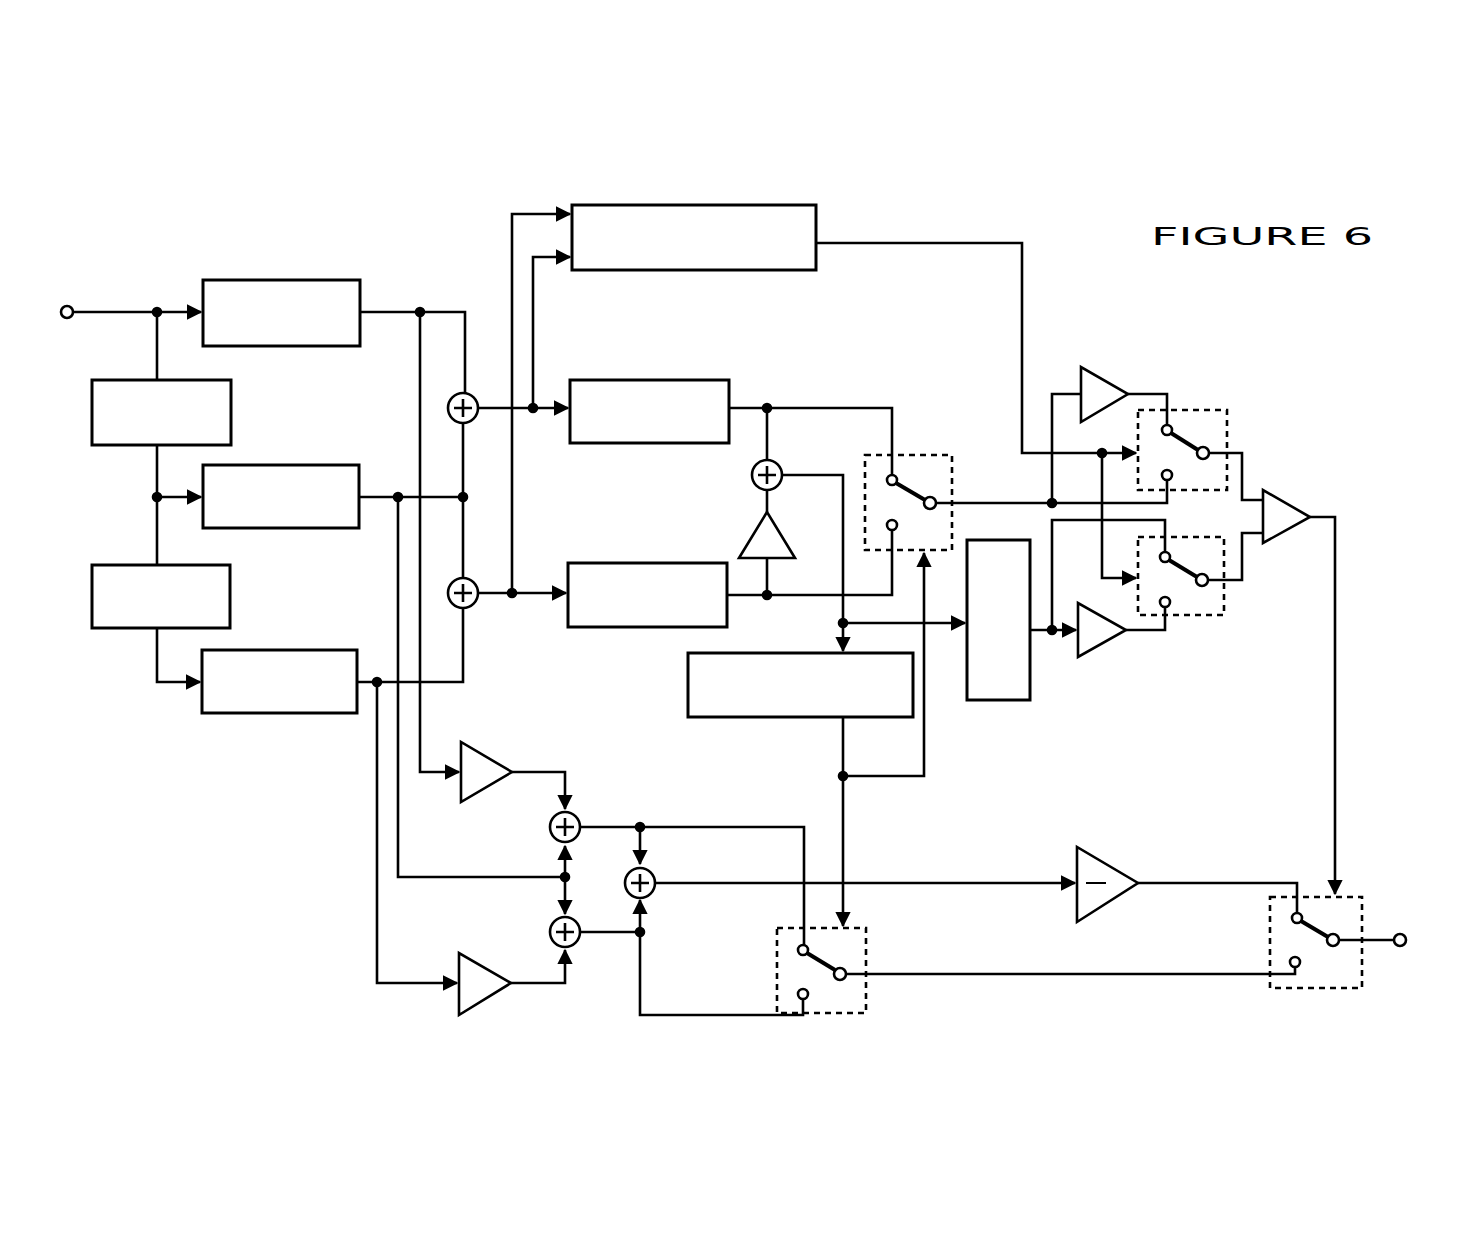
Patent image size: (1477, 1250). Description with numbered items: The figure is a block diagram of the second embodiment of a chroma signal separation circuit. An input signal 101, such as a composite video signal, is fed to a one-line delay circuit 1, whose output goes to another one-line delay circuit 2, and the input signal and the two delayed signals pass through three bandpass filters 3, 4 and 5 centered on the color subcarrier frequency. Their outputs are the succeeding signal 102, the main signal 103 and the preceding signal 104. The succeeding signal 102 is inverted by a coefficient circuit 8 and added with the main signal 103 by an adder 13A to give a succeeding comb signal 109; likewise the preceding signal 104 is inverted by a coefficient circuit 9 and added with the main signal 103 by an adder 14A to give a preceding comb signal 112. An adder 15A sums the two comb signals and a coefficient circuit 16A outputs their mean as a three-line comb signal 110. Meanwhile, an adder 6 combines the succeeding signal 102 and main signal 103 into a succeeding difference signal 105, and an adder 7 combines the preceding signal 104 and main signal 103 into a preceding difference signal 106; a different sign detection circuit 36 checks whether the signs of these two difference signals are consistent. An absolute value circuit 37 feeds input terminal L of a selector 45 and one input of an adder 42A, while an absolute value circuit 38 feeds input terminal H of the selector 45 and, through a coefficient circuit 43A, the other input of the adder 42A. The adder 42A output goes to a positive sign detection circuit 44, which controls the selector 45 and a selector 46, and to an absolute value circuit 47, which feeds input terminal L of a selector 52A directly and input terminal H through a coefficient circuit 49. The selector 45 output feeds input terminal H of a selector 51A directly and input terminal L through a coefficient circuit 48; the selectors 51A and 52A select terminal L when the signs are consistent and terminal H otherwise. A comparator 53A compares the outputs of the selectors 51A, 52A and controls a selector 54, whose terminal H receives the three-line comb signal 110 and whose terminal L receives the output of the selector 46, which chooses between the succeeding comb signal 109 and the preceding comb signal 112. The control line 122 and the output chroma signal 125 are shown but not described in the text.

The one-line delay circuit 1 is at (130, 380).
The one-line delay circuit 2 is at (130, 565).
The bandpass filter 3 is at (302, 280).
The bandpass filter 4 is at (298, 465).
The bandpass filter 5 is at (298, 650).
The adder 6 is at (468, 393).
The adder 7 is at (467, 578).
The coefficient circuit 8 is at (482, 752).
The coefficient circuit 9 is at (487, 965).
The adder 13A is at (573, 812).
The adder 14A is at (570, 947).
The adder 15A is at (645, 867).
The coefficient circuit 16A is at (1097, 858).
The different sign detection circuit 36 is at (680, 270).
The absolute value circuit 37 is at (672, 380).
The absolute value circuit 38 is at (670, 563).
The adder 42A is at (777, 463).
The coefficient circuit 43A is at (783, 540).
The positive sign detection circuit 44 is at (798, 717).
The selector 45 is at (910, 455).
The selector 46 is at (866, 947).
The absolute value circuit 47 is at (1010, 700).
The coefficient circuit 48 is at (1097, 377).
The coefficient circuit 49 is at (1097, 657).
The selector 51A is at (1187, 410).
The selector 52A is at (1185, 616).
The comparator 53A is at (1290, 492).
The selector 54 is at (1262, 1010).
The input signal 101 is at (100, 310).
The succeeding signal 102 is at (382, 312).
The main signal 103 is at (372, 495).
The preceding signal 104 is at (375, 840).
The succeeding difference signal 105 is at (537, 327).
The preceding difference signal 106 is at (528, 598).
The succeeding comb signal 109 is at (740, 823).
The three-line comb signal 110 is at (1193, 883).
The preceding comb signal 112 is at (687, 1015).
The positive sign detection output signal 122 is at (843, 818).
The chroma signal 125 is at (1372, 937).